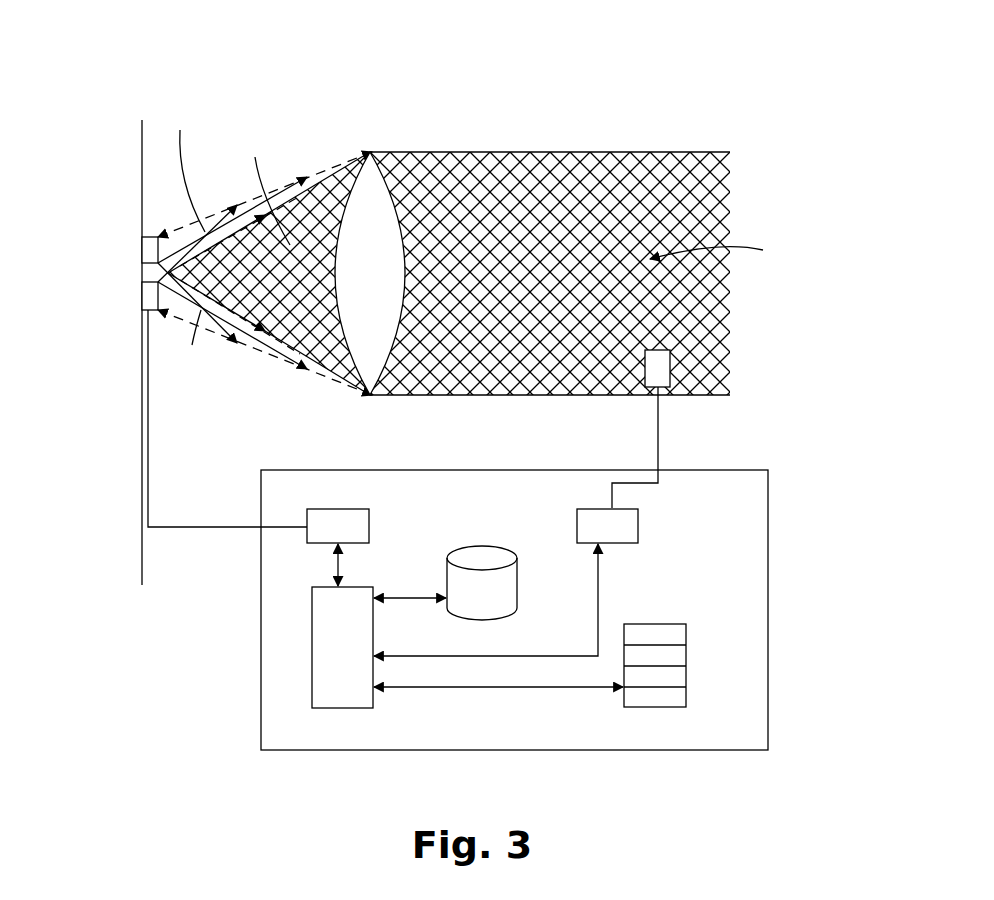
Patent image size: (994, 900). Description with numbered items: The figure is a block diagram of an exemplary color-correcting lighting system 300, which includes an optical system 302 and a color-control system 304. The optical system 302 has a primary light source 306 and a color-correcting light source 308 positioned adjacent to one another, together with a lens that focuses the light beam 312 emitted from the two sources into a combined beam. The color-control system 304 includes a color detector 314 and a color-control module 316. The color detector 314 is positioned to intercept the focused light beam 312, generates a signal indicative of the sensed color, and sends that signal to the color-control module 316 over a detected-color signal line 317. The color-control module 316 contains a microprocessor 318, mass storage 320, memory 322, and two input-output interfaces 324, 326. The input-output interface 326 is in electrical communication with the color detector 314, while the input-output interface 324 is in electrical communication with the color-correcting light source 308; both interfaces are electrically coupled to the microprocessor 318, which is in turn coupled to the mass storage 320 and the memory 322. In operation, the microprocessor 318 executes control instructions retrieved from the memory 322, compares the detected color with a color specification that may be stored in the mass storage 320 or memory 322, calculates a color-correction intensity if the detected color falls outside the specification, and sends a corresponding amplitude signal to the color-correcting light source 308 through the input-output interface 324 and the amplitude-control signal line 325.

The color-correcting lighting system 300 is at (697, 110).
The optical system 302 is at (372, 140).
The color-control system 304 is at (438, 460).
The primary light source 306 is at (141, 250).
The color-correcting light source 308 is at (141, 295).
The light beam 312 is at (538, 148).
The color detector 314 is at (672, 368).
The color-control module 316 is at (687, 563).
The detected-color signal line 317 is at (658, 428).
The microprocessor 318 is at (342, 647).
The mass storage 320 is at (482, 583).
The memory 322 is at (686, 683).
The input-output interface 324 is at (348, 508).
The amplitude-control signal line 325 is at (148, 432).
The input-output interface 326 is at (638, 527).